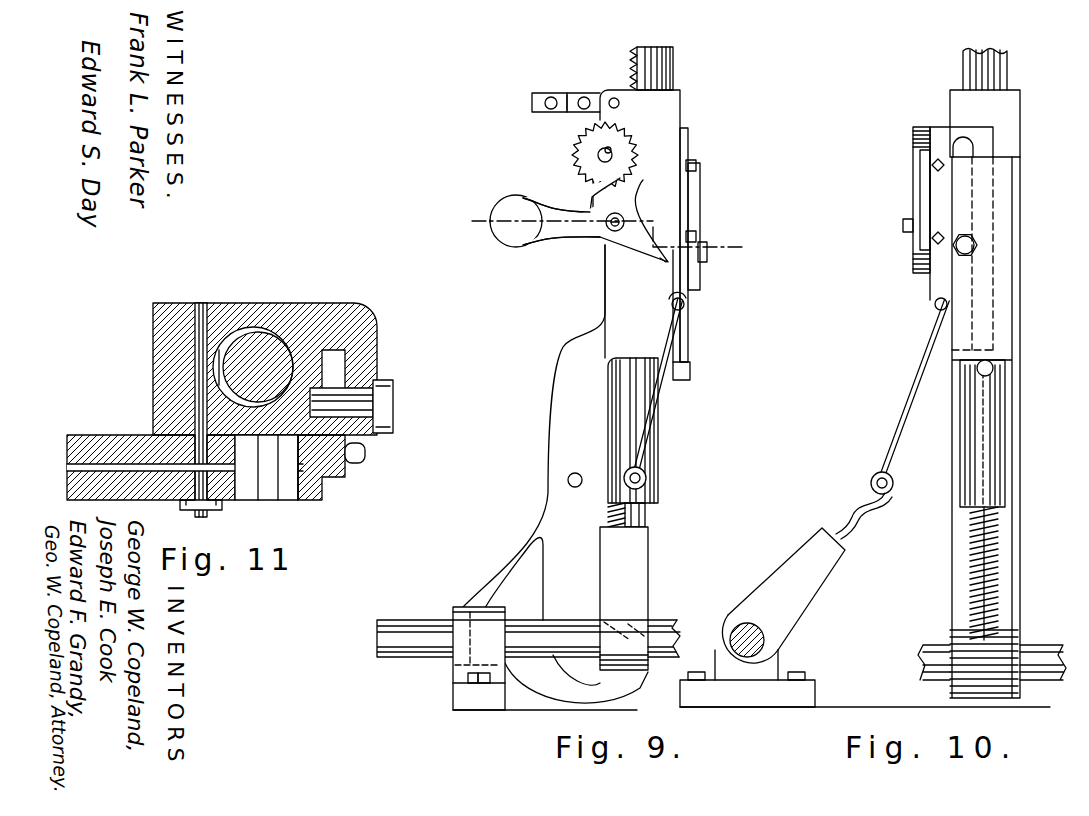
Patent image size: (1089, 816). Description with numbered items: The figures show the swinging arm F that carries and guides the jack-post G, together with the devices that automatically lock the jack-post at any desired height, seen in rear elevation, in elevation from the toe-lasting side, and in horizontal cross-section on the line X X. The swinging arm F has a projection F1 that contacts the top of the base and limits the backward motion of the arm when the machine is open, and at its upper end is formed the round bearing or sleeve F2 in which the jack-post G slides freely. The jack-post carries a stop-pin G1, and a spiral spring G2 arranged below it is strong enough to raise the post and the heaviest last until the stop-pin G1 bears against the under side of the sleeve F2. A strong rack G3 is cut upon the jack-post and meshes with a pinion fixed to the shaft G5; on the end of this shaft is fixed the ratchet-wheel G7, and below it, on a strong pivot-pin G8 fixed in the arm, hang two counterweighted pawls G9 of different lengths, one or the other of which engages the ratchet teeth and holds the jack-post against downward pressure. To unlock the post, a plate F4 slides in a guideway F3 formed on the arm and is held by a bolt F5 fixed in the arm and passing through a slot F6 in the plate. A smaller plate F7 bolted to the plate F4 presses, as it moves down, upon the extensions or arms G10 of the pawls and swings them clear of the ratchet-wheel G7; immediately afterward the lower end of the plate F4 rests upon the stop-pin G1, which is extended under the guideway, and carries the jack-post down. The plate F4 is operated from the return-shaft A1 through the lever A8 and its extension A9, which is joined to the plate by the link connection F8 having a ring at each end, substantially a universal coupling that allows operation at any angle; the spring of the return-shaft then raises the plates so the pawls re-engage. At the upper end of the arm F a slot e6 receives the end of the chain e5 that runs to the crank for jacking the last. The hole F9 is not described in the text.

In FIG. 9, the swinging arm F is at (560, 474).
In FIG. 10, the swinging arm F is at (1006, 545).
In FIG. 9, the projection F1 is at (470, 601).
In FIG. 11, the round bearing or sleeve F2 is at (254, 315).
In FIG. 9, the round bearing or sleeve F2 is at (636, 226).
In FIG. 10, the round bearing or sleeve F2 is at (1005, 110).
In FIG. 11, the guideway F3 is at (350, 348).
In FIG. 11, the plate F4 is at (367, 372).
In FIG. 9, the plate F4 is at (689, 147).
In FIG. 10, the plate F4 is at (961, 213).
In FIG. 11, the bolt F5 is at (392, 410).
In FIG. 9, the bolt F5 is at (705, 253).
In FIG. 10, the bolt F5 is at (966, 256).
In FIG. 10, the slot F6 is at (976, 146).
In FIG. 11, the smaller plate F7 is at (323, 490).
In FIG. 9, the smaller plate F7 is at (697, 206).
In FIG. 10, the smaller plate F7 is at (926, 196).
In FIG. 9, the link connection F8 is at (655, 411).
In FIG. 10, the link connection F8 is at (914, 390).
In FIG. 9, the hole in frame F9 is at (568, 480).
In FIG. 11, the jack-post G is at (268, 348).
In FIG. 9, the jack-post G is at (655, 58).
In FIG. 10, the jack-post G is at (985, 59).
In FIG. 9, the stop-pin G1 is at (690, 371).
In FIG. 10, the stop-pin G1 is at (1006, 365).
In FIG. 9, the spiral spring G2 is at (646, 521).
In FIG. 10, the spiral spring G2 is at (985, 560).
In FIG. 11, the rack G3 is at (224, 350).
In FIG. 9, the rack G3 is at (630, 55).
In FIG. 9, the shaft G5 is at (600, 151).
In FIG. 9, the ratchet-wheel G7 is at (627, 136).
In FIG. 11, the pivot-pin G8 is at (202, 304).
In FIG. 9, the counterweighted pawls G9 is at (579, 219).
In FIG. 9, the extensions or arms G10 is at (652, 245).
In FIG. 9, the return-shaft A1 is at (528, 627).
In FIG. 9, the lever A8 is at (624, 598).
In FIG. 10, the lever A8 is at (762, 617).
In FIG. 9, the extension A9 is at (650, 490).
In FIG. 10, the extension A9 is at (870, 506).
In FIG. 9, the chain e5 is at (555, 93).
In FIG. 9, the slot e6 is at (591, 92).
In FIG. 9, the section line X is at (604, 238).